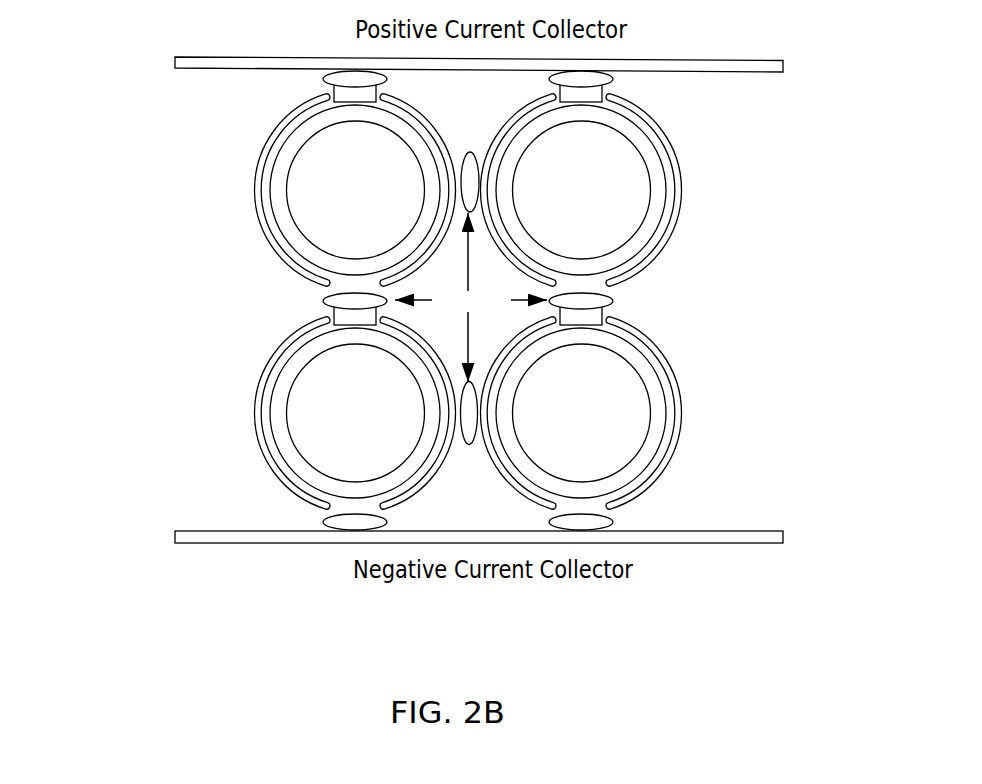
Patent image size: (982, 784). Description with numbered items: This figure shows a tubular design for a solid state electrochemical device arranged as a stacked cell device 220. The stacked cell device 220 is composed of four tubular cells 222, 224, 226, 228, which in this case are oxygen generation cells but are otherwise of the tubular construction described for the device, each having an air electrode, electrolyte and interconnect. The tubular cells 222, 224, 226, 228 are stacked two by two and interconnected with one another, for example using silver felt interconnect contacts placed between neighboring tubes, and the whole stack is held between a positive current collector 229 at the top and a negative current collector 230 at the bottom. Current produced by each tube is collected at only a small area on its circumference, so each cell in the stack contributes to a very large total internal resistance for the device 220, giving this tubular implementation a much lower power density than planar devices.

The stacked cell device 220 is at (429, 300).
The tubular cell 222 is at (247, 223).
The tubular cell 224 is at (245, 389).
The tubular cell 226 is at (690, 223).
The tubular cell 228 is at (692, 390).
The positive current collector 229 is at (785, 66).
The negative current collector 230 is at (785, 536).